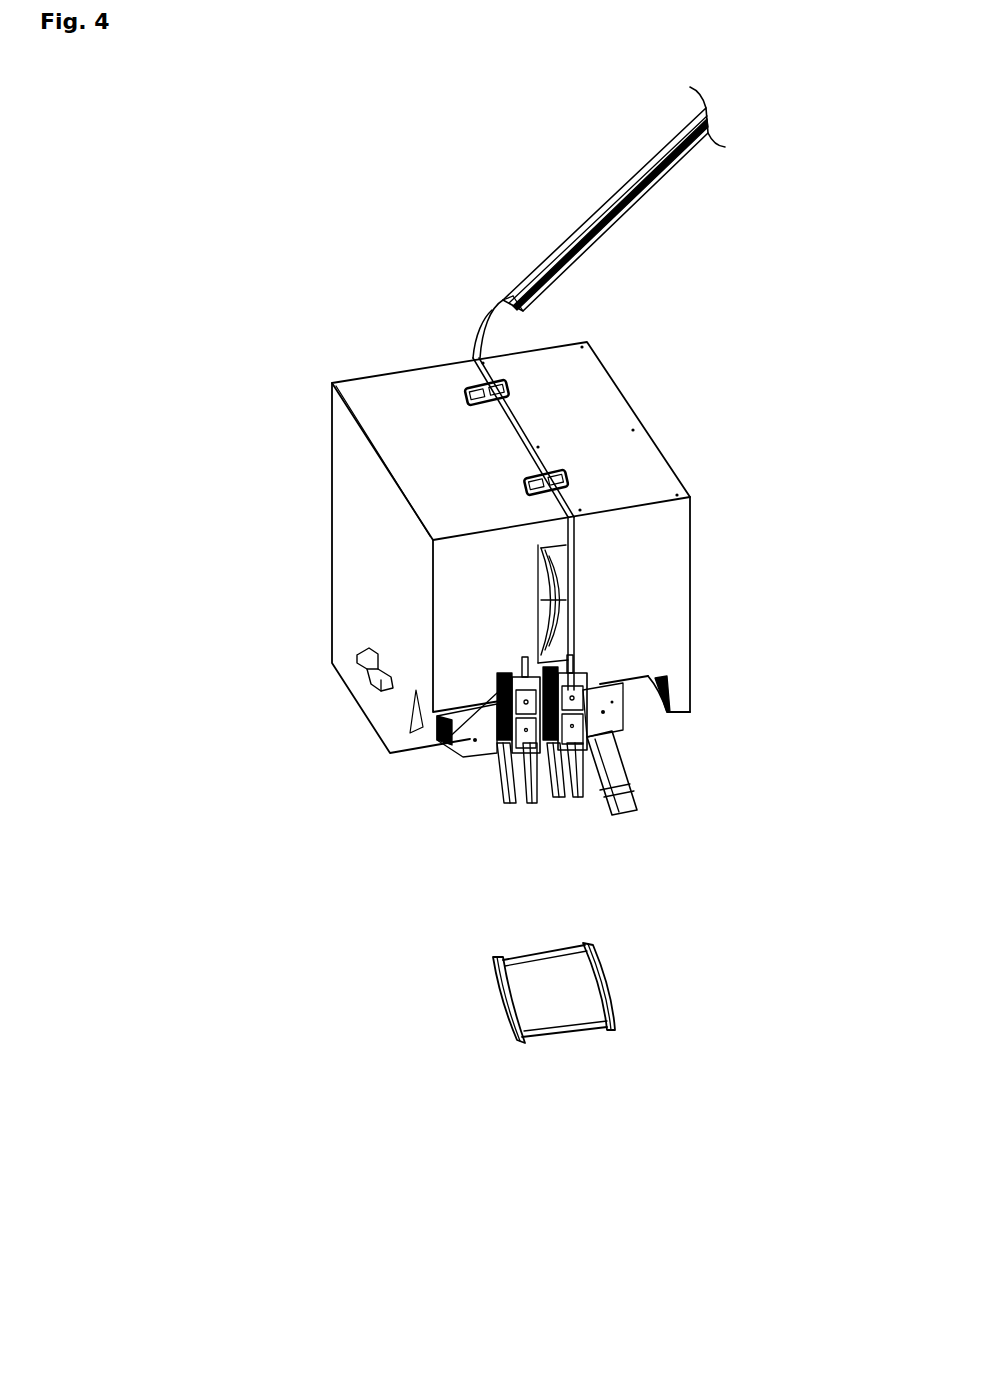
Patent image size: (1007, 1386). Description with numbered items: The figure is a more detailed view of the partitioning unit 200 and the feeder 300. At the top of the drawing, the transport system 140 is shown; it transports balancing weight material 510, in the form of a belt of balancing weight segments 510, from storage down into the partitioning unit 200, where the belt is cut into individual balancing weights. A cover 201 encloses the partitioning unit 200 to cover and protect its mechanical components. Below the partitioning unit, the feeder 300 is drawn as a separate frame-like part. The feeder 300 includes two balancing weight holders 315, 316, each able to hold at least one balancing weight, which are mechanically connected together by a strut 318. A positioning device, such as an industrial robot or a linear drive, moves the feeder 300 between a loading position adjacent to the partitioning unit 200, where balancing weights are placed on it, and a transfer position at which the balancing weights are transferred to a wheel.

The transport system 140 is at (630, 203).
The belt of balancing weight segments 510 is at (490, 312).
The partitioning unit 200 is at (527, 578).
The cover 201 is at (358, 477).
The feeder 300 is at (621, 1140).
The balancing weight holder 315 is at (523, 1045).
The balancing weight holder 316 is at (607, 1002).
The strut 318 is at (580, 1037).